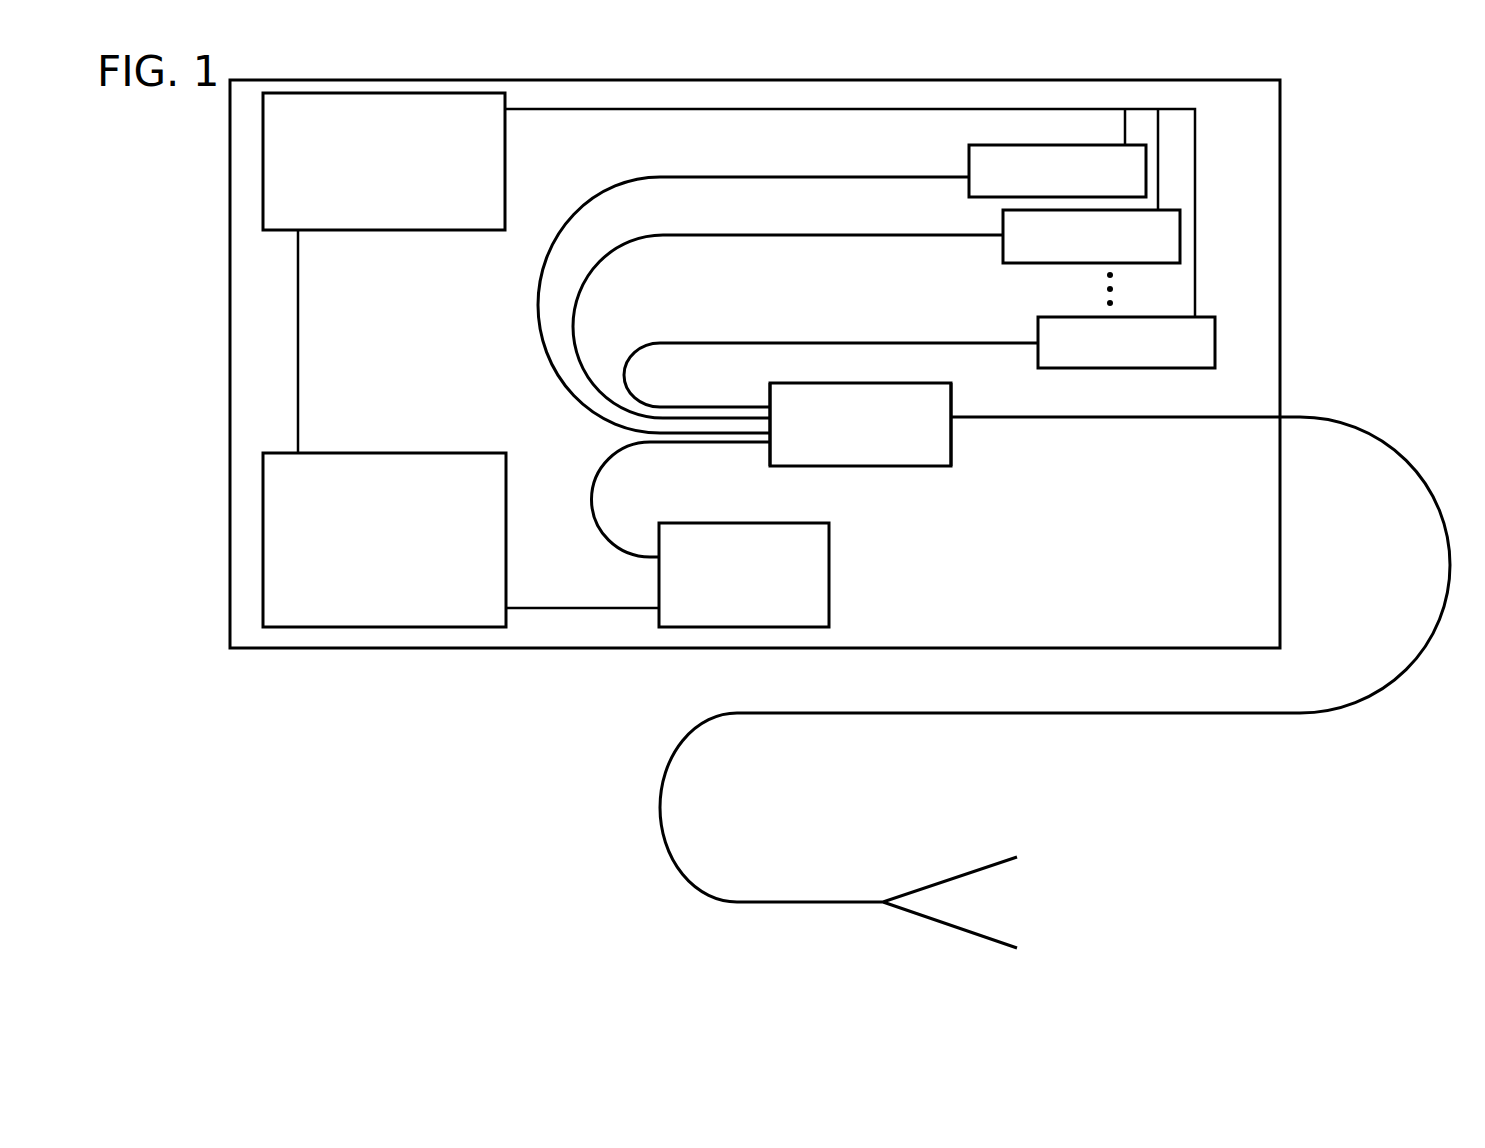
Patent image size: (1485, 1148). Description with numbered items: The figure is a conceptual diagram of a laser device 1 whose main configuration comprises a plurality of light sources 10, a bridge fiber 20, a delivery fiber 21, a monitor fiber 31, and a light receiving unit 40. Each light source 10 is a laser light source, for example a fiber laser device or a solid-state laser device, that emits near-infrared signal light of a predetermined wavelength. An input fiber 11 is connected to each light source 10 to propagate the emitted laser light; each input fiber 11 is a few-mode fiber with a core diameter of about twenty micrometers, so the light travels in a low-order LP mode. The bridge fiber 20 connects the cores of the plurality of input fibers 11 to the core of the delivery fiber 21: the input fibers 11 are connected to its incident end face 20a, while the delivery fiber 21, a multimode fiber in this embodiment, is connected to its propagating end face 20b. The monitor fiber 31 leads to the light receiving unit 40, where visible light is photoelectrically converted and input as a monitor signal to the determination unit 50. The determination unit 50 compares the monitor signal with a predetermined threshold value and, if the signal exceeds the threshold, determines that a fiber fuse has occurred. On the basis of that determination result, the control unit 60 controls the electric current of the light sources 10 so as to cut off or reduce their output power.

The laser device 1 is at (372, 806).
The light source 10 is at (1146, 172).
The input fiber 11 is at (539, 303).
The bridge fiber 20 is at (930, 466).
The incident end face 20a is at (770, 383).
The propagating end face 20b is at (951, 383).
The delivery fiber 21 is at (660, 806).
The monitor fiber 31 is at (592, 497).
The light receiving unit 40 is at (829, 575).
The determination unit 50 is at (263, 545).
The control unit 60 is at (263, 157).